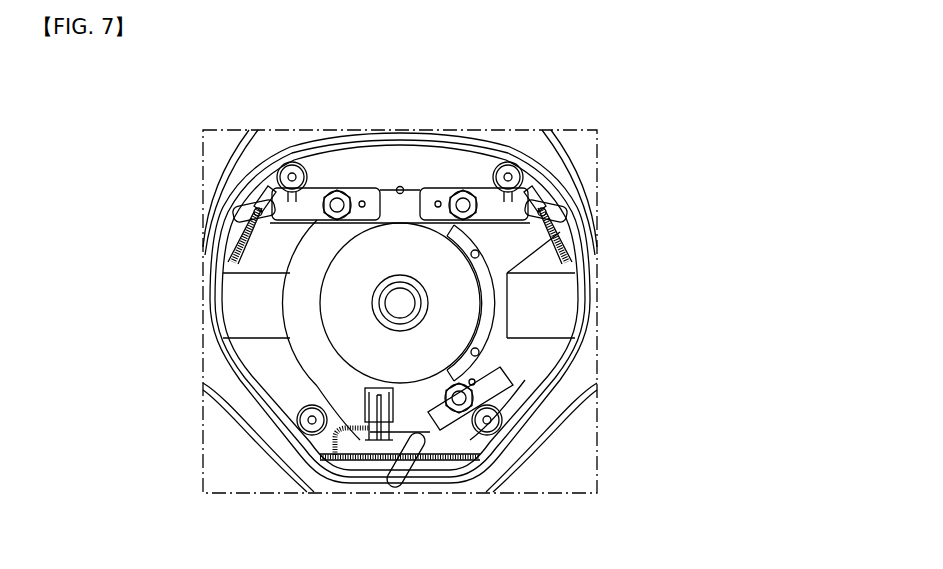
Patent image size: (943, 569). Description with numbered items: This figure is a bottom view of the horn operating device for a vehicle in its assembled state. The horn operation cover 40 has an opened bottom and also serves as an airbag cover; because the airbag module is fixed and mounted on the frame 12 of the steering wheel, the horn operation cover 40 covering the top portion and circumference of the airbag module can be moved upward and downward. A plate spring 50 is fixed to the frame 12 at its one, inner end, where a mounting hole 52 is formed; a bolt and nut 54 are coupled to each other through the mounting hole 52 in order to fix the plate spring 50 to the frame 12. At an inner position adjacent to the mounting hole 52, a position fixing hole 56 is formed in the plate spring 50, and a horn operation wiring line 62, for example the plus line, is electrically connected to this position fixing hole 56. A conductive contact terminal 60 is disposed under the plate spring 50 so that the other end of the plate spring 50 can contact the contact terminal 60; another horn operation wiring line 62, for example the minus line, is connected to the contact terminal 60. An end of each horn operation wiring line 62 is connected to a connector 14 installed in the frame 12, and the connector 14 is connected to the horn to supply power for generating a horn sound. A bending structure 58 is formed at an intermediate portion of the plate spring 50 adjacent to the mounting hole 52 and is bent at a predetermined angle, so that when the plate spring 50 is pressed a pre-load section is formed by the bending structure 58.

The frame 12 is at (266, 311).
The connector 14 is at (372, 370).
The horn operation cover 40 is at (584, 212).
The plate spring 50 is at (250, 188).
The mounting hole 52 is at (331, 193).
The bolt and nut 54 is at (341, 198).
The position fixing hole 56 is at (374, 197).
The bending structure 58 is at (257, 253).
The contact terminal 60 is at (528, 172).
The horn operation wiring line 62 is at (503, 301).